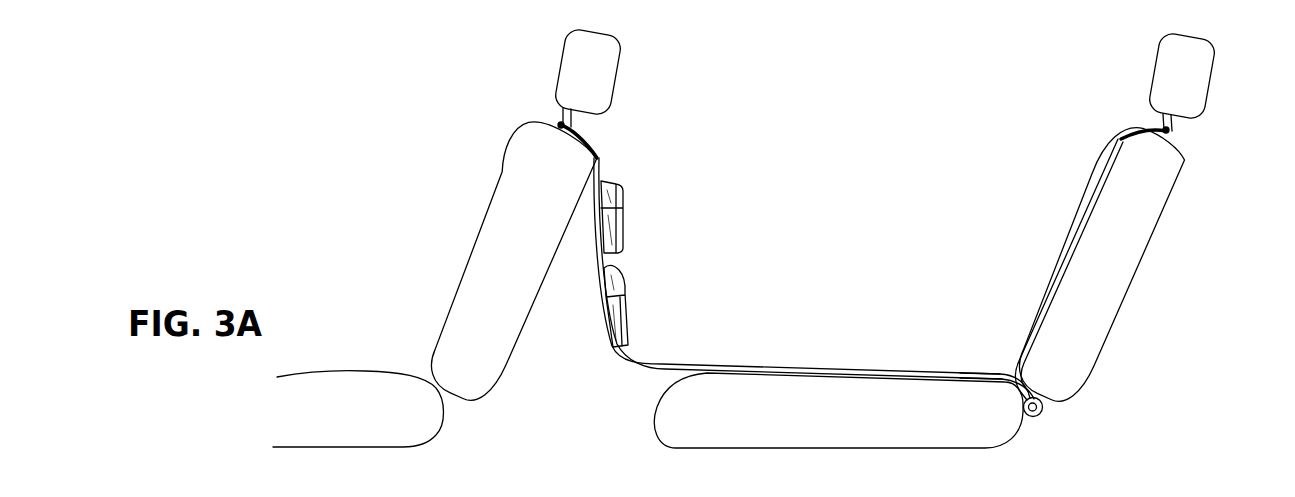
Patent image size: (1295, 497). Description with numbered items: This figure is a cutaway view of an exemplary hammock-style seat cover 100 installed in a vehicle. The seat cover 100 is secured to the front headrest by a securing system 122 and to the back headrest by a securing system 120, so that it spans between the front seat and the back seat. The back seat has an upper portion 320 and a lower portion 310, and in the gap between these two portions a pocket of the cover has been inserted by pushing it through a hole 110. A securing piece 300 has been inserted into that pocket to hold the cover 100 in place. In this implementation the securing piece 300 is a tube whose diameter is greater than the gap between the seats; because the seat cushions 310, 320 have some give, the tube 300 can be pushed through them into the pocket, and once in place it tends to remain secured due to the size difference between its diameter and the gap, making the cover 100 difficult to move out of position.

The seat cover 100 is at (1050, 253).
The hole 110 is at (1012, 373).
The securing system 120 is at (1170, 132).
The securing system 122 is at (558, 125).
The securing piece 300 is at (1047, 426).
The lower portion of the back seat 310 is at (848, 412).
The upper portion of the back seat 320 is at (1125, 239).